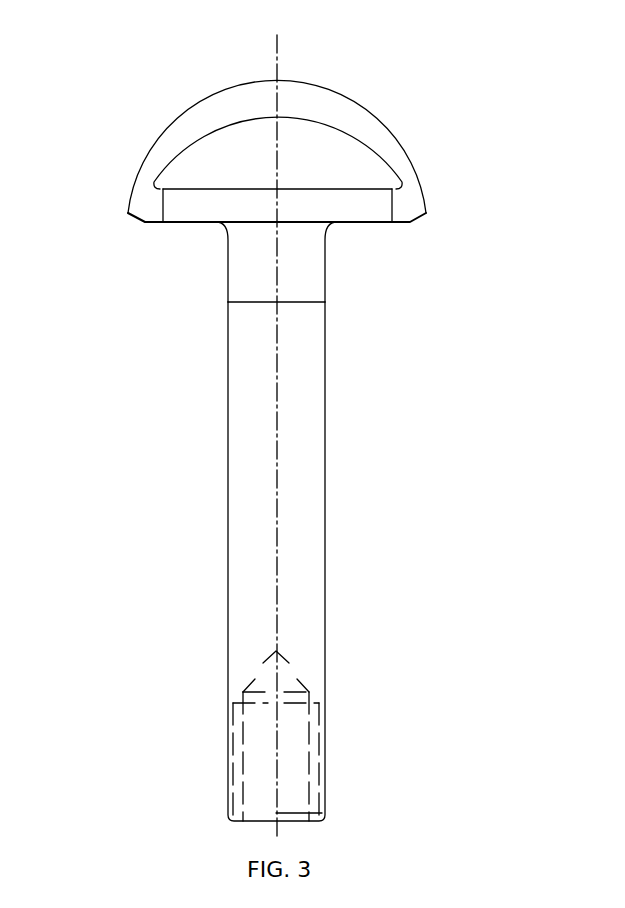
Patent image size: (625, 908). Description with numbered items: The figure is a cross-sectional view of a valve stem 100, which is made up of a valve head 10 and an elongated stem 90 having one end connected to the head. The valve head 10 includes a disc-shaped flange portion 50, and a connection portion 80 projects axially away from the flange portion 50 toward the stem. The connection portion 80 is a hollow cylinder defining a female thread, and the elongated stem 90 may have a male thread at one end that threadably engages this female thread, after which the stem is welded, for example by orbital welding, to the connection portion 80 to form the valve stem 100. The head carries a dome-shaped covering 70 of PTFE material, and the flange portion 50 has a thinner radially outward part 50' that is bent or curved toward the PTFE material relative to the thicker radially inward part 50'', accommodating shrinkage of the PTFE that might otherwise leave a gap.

The valve head 10 is at (178, 113).
The dome-shaped covering 70 is at (395, 133).
The disc-shaped flange portion 50 is at (381, 253).
The thinner radially outward part 50' is at (163, 263).
The thicker radially inward part 50'' is at (363, 242).
The connection portion 80 is at (226, 278).
The elongated stem 90 is at (227, 459).
The valve stem 100 is at (286, 436).